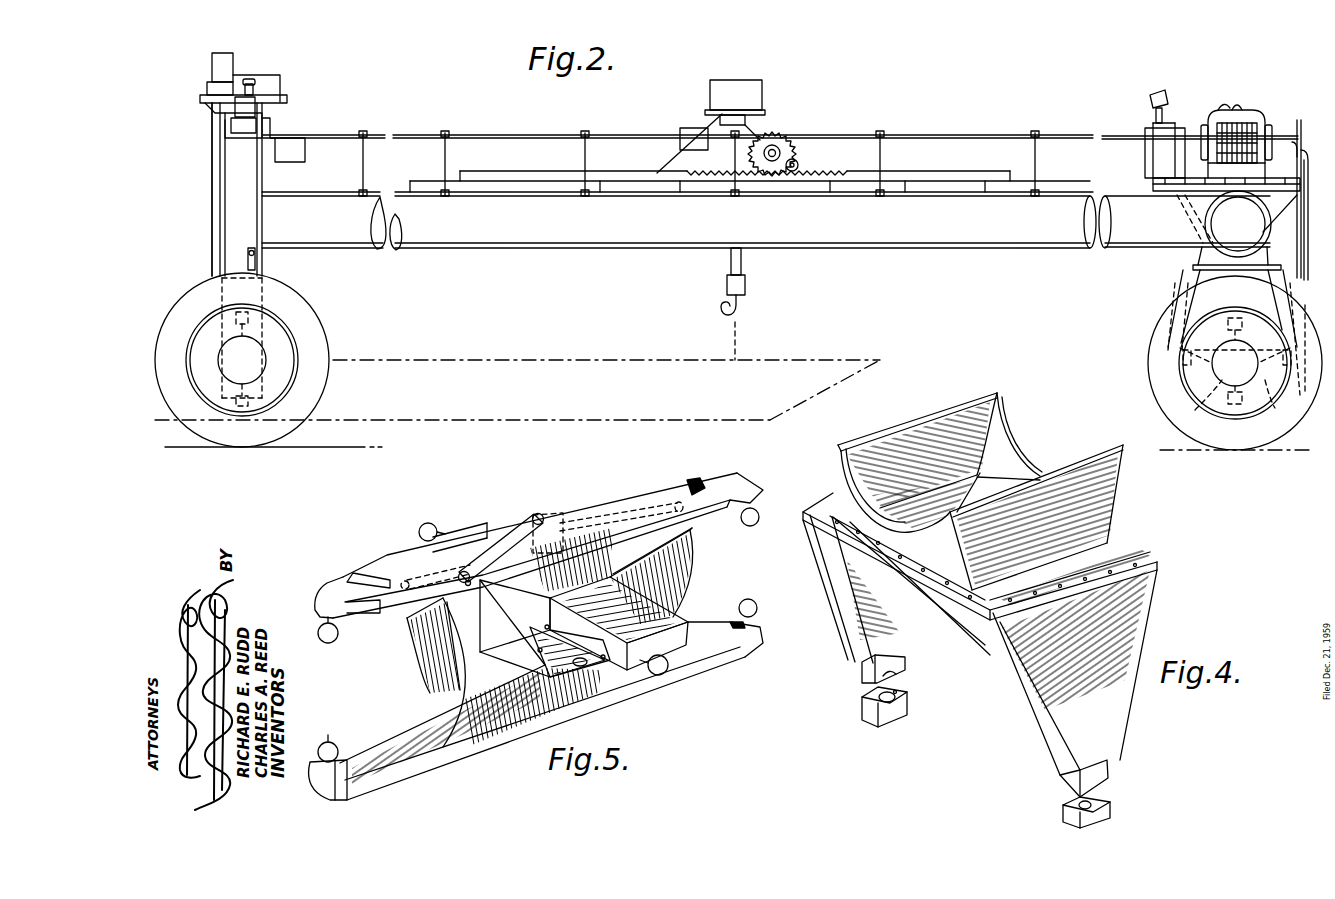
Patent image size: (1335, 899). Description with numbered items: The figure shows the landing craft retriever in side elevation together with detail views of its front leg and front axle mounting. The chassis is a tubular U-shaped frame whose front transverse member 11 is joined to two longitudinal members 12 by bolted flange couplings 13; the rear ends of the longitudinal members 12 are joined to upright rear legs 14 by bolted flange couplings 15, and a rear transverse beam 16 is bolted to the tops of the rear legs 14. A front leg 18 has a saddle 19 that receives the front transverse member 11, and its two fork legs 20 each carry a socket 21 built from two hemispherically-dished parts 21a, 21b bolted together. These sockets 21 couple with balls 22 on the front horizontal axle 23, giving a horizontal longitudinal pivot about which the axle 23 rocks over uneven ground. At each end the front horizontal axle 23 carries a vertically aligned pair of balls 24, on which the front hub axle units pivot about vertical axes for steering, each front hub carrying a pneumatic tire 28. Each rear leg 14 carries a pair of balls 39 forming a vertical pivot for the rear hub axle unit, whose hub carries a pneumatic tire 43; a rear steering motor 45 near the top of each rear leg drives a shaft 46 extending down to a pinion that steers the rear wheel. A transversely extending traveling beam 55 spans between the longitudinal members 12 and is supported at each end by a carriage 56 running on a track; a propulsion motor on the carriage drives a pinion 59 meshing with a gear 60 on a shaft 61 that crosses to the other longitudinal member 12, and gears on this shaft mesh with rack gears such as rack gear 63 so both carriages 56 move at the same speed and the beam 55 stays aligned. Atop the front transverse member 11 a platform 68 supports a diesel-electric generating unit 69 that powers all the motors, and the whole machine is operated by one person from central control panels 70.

In FIG. 2, the front transverse member 11 is at (1270, 230).
In FIG. 2, the longitudinal members 12 is at (702, 246).
In FIG. 2, the bolted flange couplings 13 is at (1270, 210).
In FIG. 2, the rear legs 14 is at (236, 214).
In FIG. 2, the bolted flange couplings 15 is at (263, 256).
In FIG. 2, the rear transverse beam 16 is at (236, 136).
In FIG. 2, the front leg 18 is at (1176, 290).
In FIG. 4, the front leg 18 is at (1146, 632).
In FIG. 4, the saddle 19 is at (1025, 458).
In FIG. 2, the fork legs 20 is at (1182, 320).
In FIG. 4, the fork legs 20 is at (903, 645).
In FIG. 4, the socket 21 is at (860, 692).
In FIG. 4, the hemispherically-dished part 21a is at (908, 670).
In FIG. 4, the hemispherically-dished part 21b is at (908, 704).
In FIG. 2, the balls 22 is at (1183, 358).
In FIG. 5, the balls 22 is at (433, 524).
In FIG. 2, the front horizontal axle 23 is at (1262, 392).
In FIG. 5, the front horizontal axle 23 is at (627, 495).
In FIG. 2, the balls 24 is at (1208, 392).
In FIG. 5, the balls 24 is at (330, 643).
In FIG. 2, the pneumatic tire 28 is at (1166, 395).
In FIG. 2, the balls 39 is at (240, 386).
In FIG. 2, the pneumatic tire 43 is at (313, 340).
In FIG. 2, the rear steering motor 45 is at (207, 90).
In FIG. 2, the shaft 46 is at (212, 186).
In FIG. 2, the traveling beam 55 is at (718, 118).
In FIG. 2, the carriage 56 is at (676, 158).
In FIG. 2, the pinion 59 is at (798, 164).
In FIG. 2, the gear 60 is at (758, 138).
In FIG. 2, the shaft 61 is at (781, 146).
In FIG. 2, the rack gear 63 is at (736, 180).
In FIG. 2, the platform 68 is at (1190, 180).
In FIG. 2, the diesel-electric generating unit 69 is at (1266, 116).
In FIG. 2, the central control panels 70 is at (1220, 99).